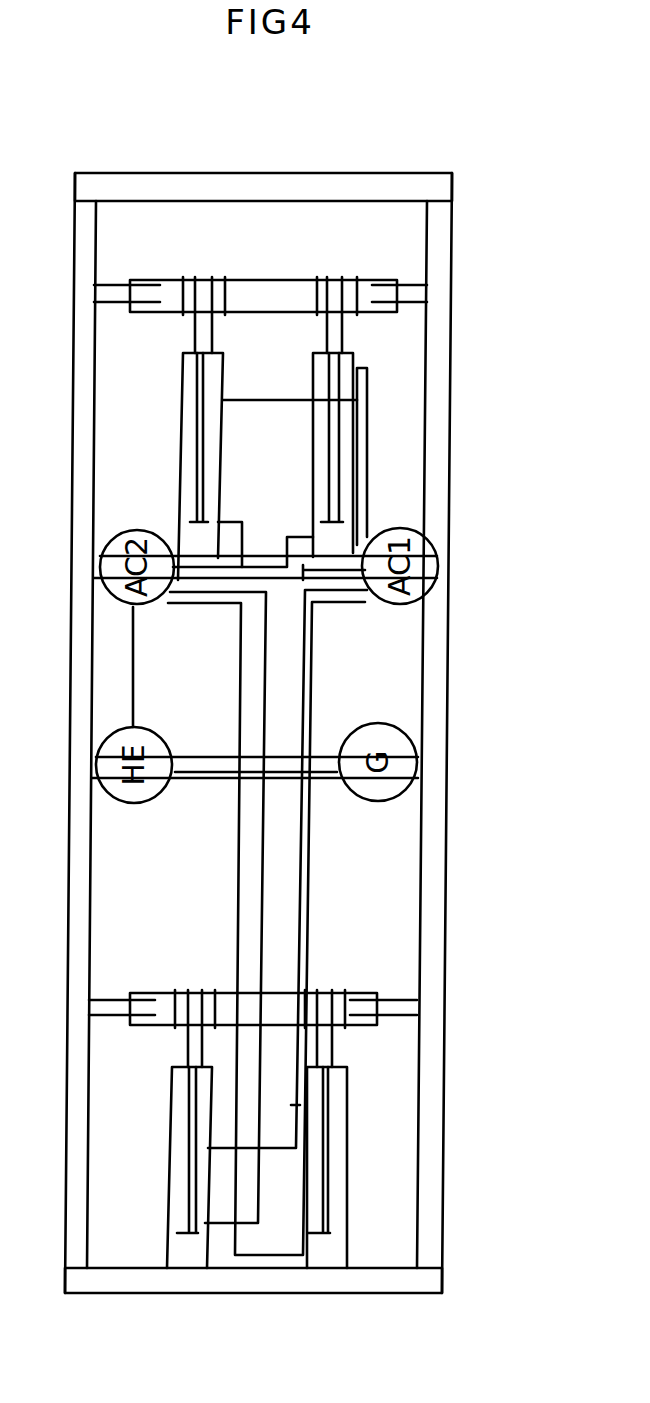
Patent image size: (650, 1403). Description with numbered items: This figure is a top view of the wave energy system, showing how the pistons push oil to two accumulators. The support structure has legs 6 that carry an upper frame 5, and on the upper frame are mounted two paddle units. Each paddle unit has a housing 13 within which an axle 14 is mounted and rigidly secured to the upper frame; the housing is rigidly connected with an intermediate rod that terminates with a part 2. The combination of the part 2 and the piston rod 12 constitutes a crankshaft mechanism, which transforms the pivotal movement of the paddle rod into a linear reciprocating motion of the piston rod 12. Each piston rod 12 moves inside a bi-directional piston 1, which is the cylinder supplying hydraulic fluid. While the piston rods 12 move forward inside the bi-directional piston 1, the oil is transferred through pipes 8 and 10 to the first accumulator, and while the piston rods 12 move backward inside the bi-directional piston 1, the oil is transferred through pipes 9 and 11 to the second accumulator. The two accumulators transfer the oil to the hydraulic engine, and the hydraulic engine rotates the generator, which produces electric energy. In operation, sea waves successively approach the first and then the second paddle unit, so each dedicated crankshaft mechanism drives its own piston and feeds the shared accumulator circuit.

The bi-directional piston 1 is at (178, 468).
The part 2 is at (192, 282).
The upper frame 5 is at (78, 805).
The legs 6 is at (215, 175).
The pipe 8 is at (266, 928).
The pipe 9 is at (287, 881).
The pipe 10 is at (239, 526).
The pipe 11 is at (307, 669).
The piston rod 12 is at (197, 408).
The housing 13 is at (148, 313).
The axle 14 is at (418, 307).